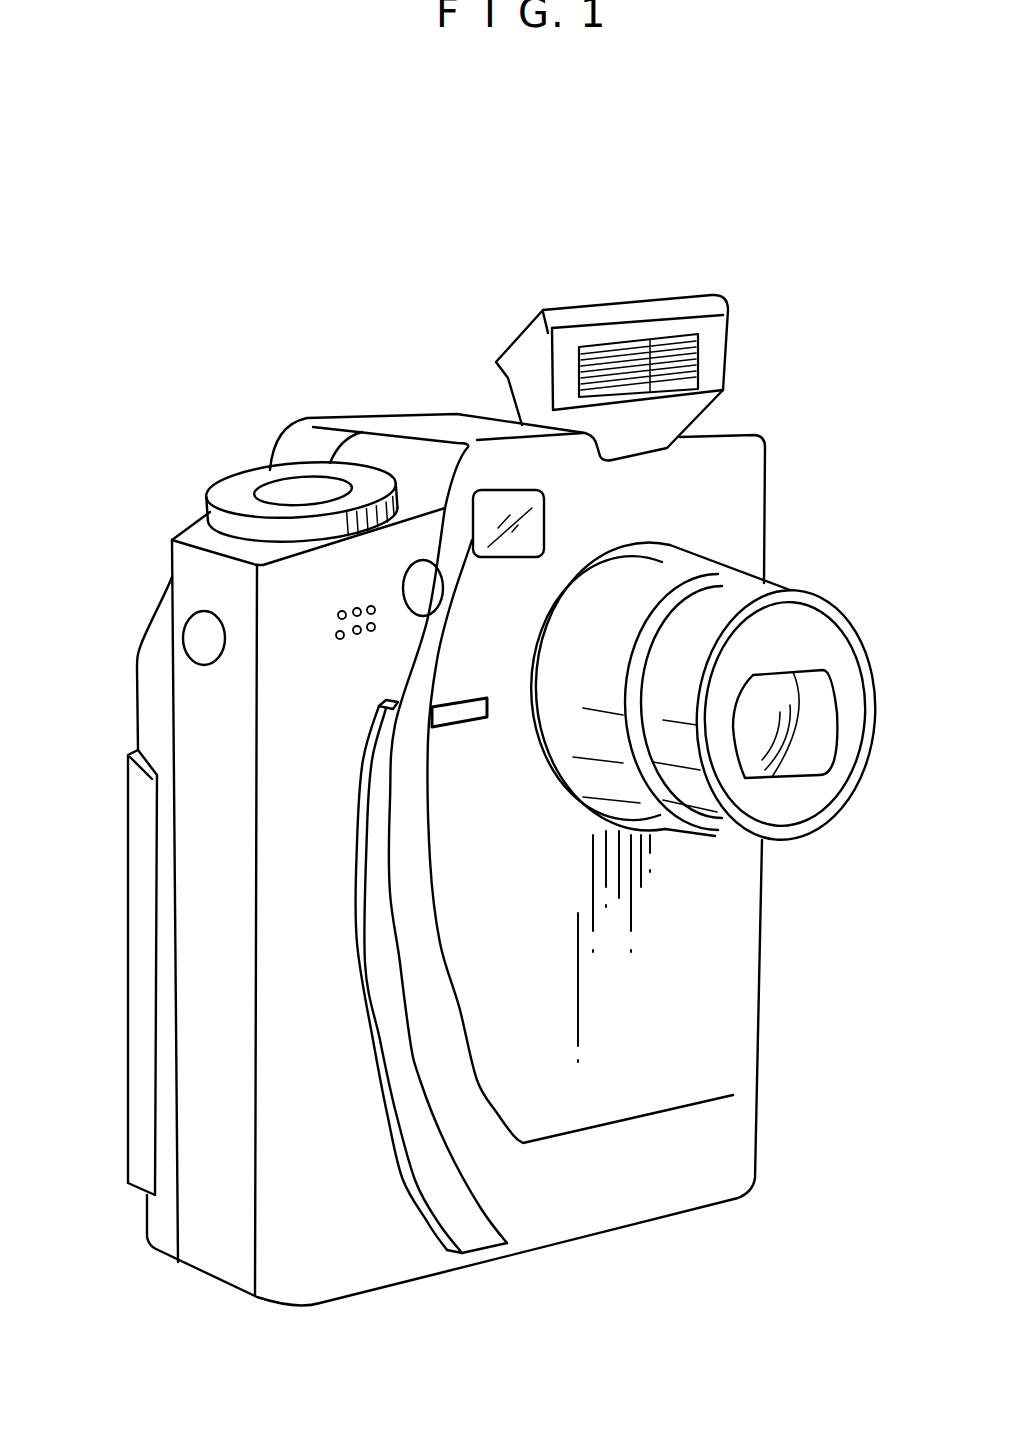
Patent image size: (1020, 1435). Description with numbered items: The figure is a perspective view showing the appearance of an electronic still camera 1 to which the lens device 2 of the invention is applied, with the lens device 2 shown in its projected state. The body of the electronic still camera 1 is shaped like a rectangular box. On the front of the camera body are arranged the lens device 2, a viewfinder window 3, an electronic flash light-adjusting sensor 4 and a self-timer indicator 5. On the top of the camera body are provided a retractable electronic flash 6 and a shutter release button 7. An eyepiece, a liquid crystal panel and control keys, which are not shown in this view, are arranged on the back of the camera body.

The electronic still camera 1 is at (140, 218).
The lens device 2 is at (802, 580).
The viewfinder window 3 is at (503, 507).
The electronic flash light-adjusting sensor 4 is at (427, 577).
The self-timer indicator 5 is at (453, 708).
The retractable electronic flash 6 is at (667, 307).
The shutter release button 7 is at (280, 493).